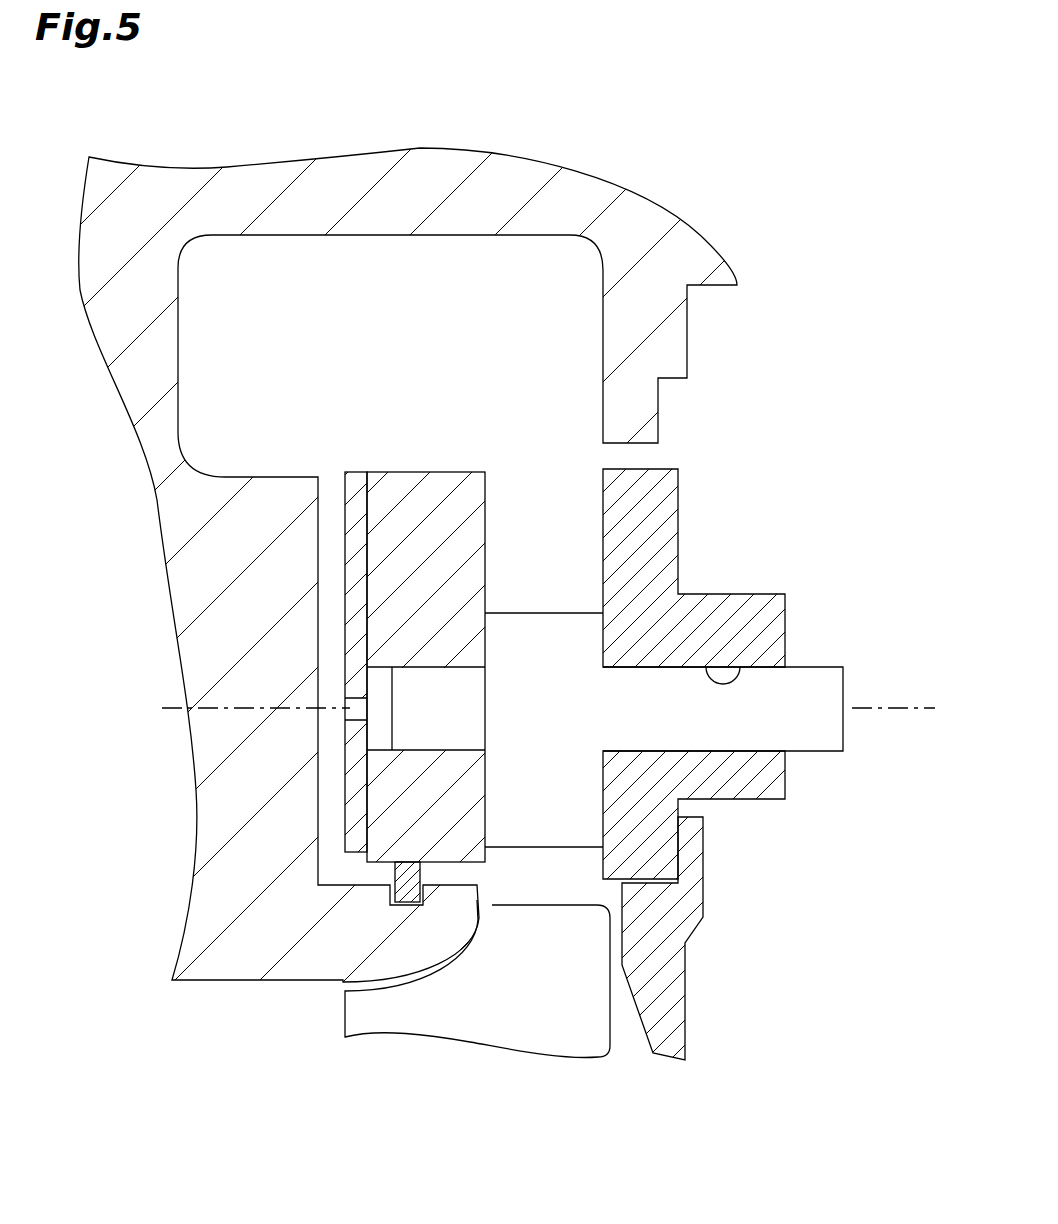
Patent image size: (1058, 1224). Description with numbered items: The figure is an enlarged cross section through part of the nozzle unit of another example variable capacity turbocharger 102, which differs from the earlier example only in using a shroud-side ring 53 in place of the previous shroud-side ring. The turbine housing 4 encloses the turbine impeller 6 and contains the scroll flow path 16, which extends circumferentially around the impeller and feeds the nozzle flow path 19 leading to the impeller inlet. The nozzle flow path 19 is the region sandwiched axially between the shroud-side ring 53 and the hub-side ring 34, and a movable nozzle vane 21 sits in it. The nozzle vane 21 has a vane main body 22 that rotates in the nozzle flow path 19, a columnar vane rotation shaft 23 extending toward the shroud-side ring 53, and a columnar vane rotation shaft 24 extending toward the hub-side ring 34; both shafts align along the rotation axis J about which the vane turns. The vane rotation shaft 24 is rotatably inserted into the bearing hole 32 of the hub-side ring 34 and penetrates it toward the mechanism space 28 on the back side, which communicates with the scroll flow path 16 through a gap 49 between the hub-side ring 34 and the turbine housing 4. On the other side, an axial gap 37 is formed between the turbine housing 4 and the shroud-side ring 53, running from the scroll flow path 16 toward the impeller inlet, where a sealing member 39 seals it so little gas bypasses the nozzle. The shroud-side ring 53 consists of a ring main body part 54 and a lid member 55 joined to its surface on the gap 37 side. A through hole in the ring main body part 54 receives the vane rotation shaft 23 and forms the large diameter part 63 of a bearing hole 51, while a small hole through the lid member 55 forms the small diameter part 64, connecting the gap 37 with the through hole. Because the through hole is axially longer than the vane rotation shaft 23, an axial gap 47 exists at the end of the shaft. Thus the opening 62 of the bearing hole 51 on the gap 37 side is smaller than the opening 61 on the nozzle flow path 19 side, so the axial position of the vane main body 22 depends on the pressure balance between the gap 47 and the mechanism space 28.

The turbine housing 4 is at (209, 566).
The turbine impeller 6 is at (585, 982).
The scroll flow path 16 is at (298, 334).
The nozzle flow path 19 is at (524, 548).
The nozzle vane 21 is at (546, 852).
The vane main body 22 is at (492, 906).
The vane rotation shaft 23 is at (318, 836).
The vane rotation shaft 24 is at (732, 730).
The mechanism space 28 is at (766, 485).
The bearing hole 32 is at (738, 672).
The hub-side ring 34 is at (620, 497).
The gap 37 is at (328, 557).
The sealing member 39 is at (392, 870).
The gap 47 is at (365, 748).
The gap 49 is at (638, 458).
The bearing hole 51 is at (61, 638).
The shroud-side ring 53 is at (347, 393).
The ring main body part 54 is at (443, 497).
The lid member 55 is at (353, 478).
The opening 61 is at (487, 690).
The opening 62 is at (380, 737).
The large diameter part 63 is at (430, 670).
The small diameter part 64 is at (348, 708).
The variable capacity turbocharger 102 is at (667, 142).
The rotation axis J is at (905, 702).